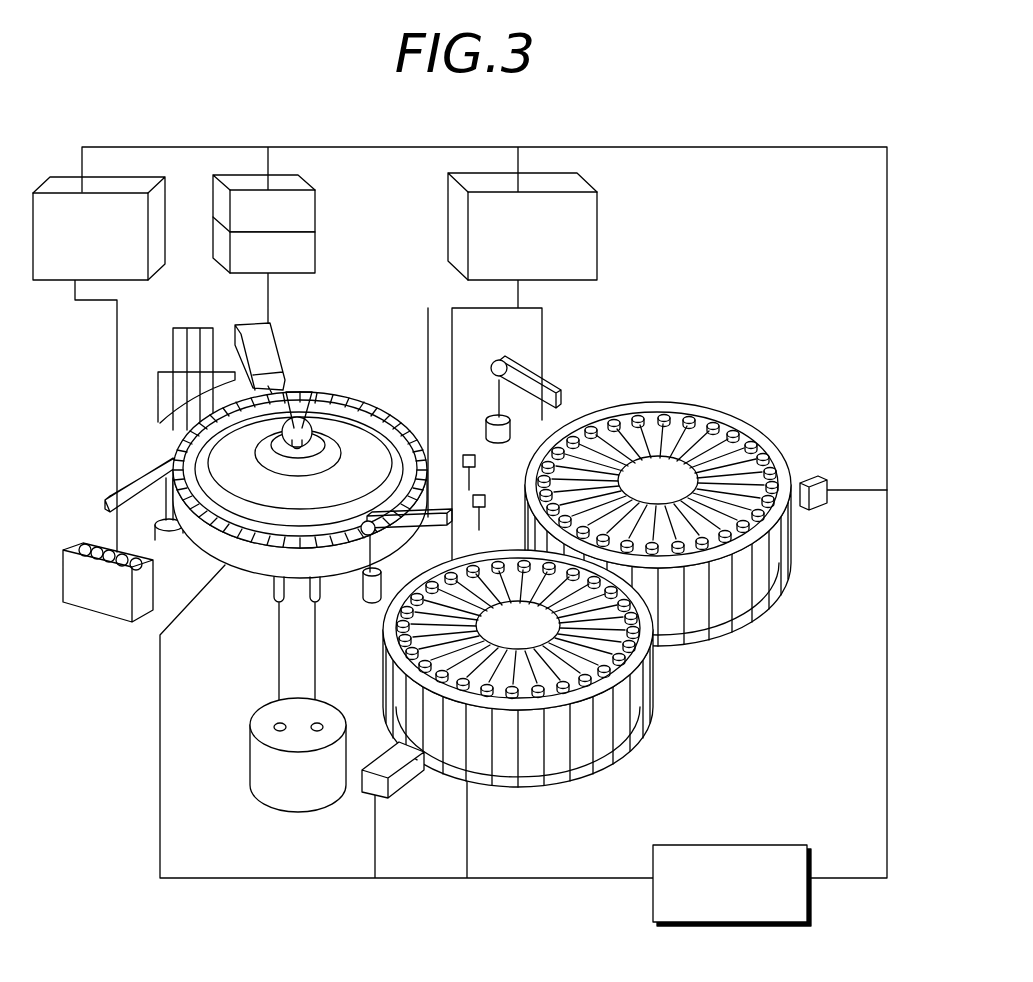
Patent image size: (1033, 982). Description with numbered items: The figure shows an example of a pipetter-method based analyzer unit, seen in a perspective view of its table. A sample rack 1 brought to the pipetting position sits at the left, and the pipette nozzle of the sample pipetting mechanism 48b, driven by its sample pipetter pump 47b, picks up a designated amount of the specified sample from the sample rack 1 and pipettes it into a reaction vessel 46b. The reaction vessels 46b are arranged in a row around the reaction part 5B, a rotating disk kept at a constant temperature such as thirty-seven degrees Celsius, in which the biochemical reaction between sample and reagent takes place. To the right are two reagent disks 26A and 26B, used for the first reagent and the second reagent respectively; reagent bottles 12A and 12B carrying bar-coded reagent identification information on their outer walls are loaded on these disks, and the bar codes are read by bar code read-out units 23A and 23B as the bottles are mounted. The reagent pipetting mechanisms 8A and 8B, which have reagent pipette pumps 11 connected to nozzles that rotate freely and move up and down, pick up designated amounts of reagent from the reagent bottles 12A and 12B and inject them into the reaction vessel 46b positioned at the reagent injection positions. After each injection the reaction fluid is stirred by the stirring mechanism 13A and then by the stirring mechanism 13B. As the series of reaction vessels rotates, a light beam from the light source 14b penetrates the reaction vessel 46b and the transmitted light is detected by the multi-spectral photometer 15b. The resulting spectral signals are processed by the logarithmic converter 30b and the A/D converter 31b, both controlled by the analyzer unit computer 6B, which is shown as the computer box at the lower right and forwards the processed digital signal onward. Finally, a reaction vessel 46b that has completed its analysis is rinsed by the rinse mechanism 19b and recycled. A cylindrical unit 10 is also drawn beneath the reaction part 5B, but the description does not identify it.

The sample rack 1 is at (104, 594).
The reaction part 5B is at (253, 575).
The analyzer unit computer 6B is at (748, 845).
The reagent pipetting mechanism 8A is at (372, 605).
The reagent pipetting mechanism 8B is at (507, 372).
The photometer / light source unit 10 is at (258, 776).
The reagent pipette pump 11 is at (597, 248).
The reagent bottle 12A is at (565, 668).
The reagent bottle 12B is at (658, 492).
The stirring mechanism 13A is at (488, 500).
The stirring mechanism 13B is at (465, 452).
The light source 14b is at (308, 393).
The multi-spectral photometer 15b is at (240, 326).
The rinse mechanism 19b is at (160, 397).
The bar code read-out unit 23A is at (405, 778).
The bar code read-out unit 23B is at (812, 475).
The reagent disk 26A is at (655, 700).
The reagent disk 26B is at (605, 408).
The logarithmic converter 30b is at (318, 249).
The A/D converter 31b is at (318, 209).
The reaction vessel 46b is at (395, 418).
The sample pipetter pump 47b is at (48, 280).
The sample pipetting mechanism 48b is at (135, 470).